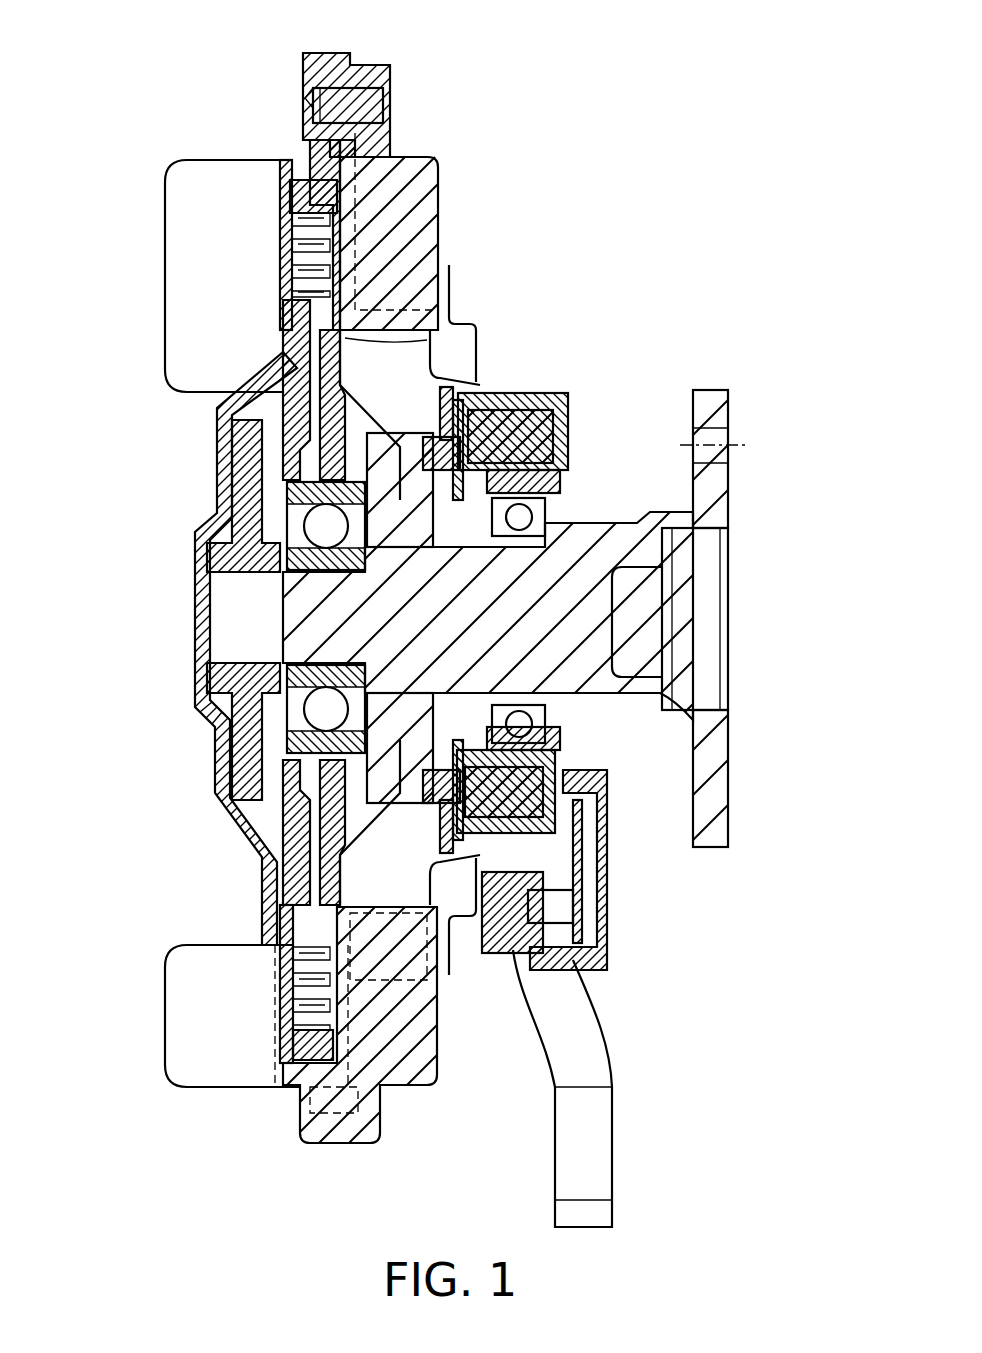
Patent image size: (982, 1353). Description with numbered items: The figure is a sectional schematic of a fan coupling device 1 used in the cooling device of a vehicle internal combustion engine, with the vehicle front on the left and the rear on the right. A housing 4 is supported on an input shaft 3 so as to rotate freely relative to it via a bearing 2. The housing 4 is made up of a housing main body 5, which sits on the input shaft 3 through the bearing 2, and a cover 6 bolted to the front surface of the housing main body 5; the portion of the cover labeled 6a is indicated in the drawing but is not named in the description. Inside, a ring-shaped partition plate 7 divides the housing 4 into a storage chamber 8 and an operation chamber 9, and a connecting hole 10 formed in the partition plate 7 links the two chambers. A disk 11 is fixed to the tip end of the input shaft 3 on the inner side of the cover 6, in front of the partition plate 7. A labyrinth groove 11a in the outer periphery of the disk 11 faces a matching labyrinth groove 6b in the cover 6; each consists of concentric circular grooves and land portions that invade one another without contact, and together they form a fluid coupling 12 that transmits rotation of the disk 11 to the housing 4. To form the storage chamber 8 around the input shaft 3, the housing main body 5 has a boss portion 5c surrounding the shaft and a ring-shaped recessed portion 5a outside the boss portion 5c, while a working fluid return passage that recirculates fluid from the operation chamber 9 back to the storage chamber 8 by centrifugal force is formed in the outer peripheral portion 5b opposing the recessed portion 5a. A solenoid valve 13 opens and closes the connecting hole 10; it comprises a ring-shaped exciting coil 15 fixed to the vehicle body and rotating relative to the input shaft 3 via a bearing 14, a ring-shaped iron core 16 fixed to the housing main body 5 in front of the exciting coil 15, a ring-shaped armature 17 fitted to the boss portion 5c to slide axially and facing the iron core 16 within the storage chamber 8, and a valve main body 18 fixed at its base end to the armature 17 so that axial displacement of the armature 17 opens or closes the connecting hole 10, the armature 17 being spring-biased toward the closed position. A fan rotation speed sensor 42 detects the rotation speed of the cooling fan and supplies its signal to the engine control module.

The fan coupling device 1 is at (652, 141).
The bearing 2 is at (313, 567).
The input shaft 3 is at (713, 495).
The housing 4 is at (170, 16).
The housing main body 5 is at (373, 72).
The ring-shaped recessed portion 5a is at (392, 373).
The outer peripheral portion 5b is at (433, 177).
The boss portion 5c is at (428, 527).
The cover 6 is at (332, 73).
The hub wall 6a is at (327, 165).
The labyrinth groove 6b is at (293, 217).
The partition plate 7 is at (318, 415).
The storage chamber 8 is at (385, 425).
The operation chamber 9 is at (312, 324).
The connecting hole 10 is at (333, 383).
The disk 11 is at (243, 487).
The labyrinth groove 11a is at (293, 273).
The fluid coupling 12 is at (85, 236).
The solenoid valve 13 is at (672, 320).
The bearing 14 is at (540, 490).
The exciting coil 15 is at (567, 438).
The iron core 16 is at (485, 418).
The armature 17 is at (480, 405).
The valve main body 18 is at (463, 393).
The fan rotation speed sensor 42 is at (503, 907).